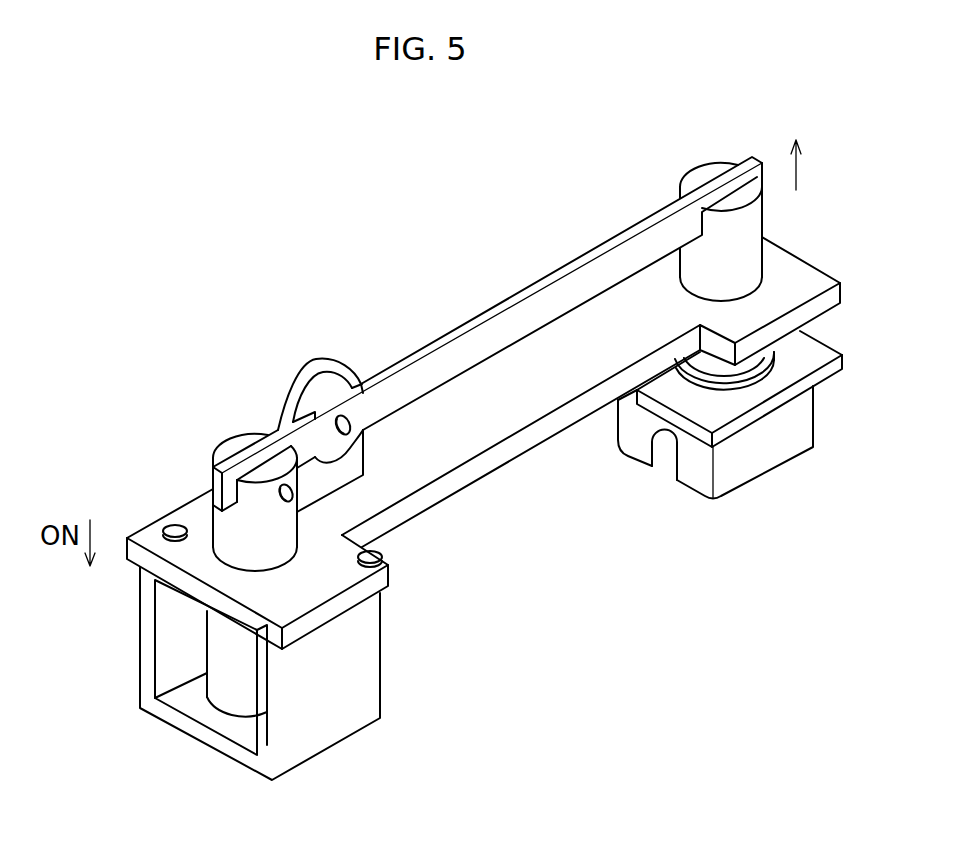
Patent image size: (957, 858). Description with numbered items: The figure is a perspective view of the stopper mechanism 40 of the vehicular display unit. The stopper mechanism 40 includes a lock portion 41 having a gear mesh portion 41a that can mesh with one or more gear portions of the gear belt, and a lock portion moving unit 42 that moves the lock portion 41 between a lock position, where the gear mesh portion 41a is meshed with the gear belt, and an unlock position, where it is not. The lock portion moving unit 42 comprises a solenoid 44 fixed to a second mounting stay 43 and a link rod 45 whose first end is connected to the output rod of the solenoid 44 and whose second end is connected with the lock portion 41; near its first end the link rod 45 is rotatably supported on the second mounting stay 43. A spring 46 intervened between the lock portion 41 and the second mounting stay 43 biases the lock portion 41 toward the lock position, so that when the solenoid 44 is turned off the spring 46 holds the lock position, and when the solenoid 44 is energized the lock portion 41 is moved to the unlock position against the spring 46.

The stopper mechanism 40 is at (153, 412).
The lock portion 41 is at (726, 458).
The gear mesh portion 41a is at (665, 470).
The lock portion moving unit 42 is at (507, 284).
The second mounting stay 43 is at (385, 495).
The solenoid 44 is at (227, 690).
The link rod 45 is at (475, 322).
The spring 46 is at (790, 365).